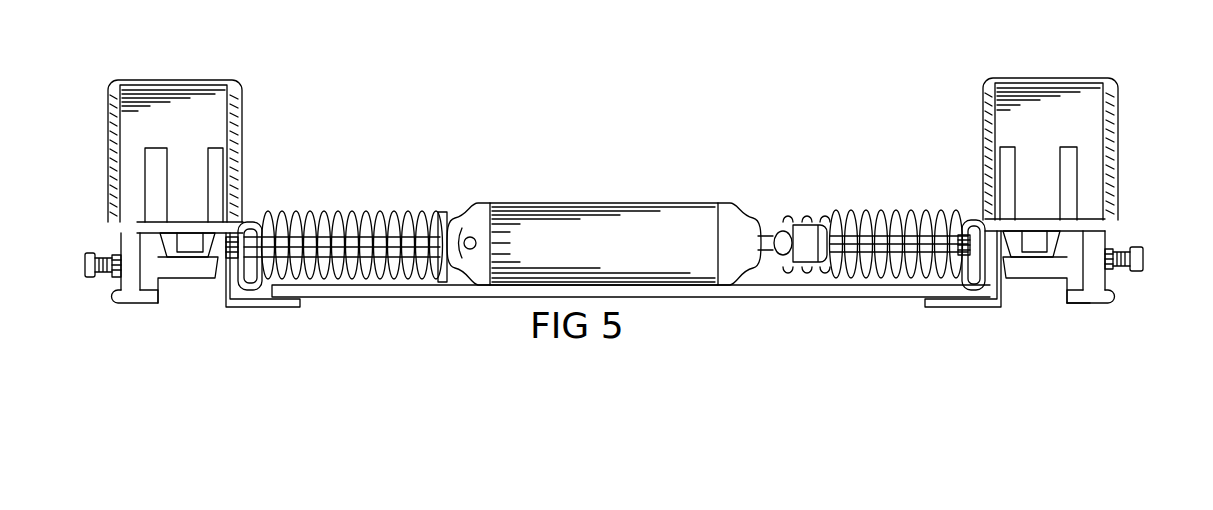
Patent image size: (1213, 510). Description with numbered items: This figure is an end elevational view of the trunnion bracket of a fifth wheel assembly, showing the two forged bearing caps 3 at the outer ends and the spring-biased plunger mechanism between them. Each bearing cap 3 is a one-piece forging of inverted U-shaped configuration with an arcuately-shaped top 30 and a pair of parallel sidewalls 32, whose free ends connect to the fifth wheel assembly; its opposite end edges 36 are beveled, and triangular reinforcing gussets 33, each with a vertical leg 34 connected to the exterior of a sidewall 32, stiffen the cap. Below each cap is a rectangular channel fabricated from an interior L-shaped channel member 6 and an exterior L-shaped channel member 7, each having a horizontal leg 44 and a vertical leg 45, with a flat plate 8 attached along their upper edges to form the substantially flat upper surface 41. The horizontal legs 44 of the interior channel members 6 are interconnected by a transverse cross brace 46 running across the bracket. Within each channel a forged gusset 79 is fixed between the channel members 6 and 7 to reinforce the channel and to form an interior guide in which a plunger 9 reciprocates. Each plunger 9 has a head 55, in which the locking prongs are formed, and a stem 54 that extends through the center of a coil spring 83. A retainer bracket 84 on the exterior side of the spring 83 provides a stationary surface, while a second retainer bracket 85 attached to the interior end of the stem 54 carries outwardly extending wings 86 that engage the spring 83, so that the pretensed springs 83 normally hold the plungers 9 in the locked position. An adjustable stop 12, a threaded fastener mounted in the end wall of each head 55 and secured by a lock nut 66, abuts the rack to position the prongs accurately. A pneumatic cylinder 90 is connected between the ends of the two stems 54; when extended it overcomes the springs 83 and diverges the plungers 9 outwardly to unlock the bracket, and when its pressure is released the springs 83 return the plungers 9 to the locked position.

The bearing cap 3 is at (641, 127).
The L-shaped channel member 6 is at (238, 302).
The L-shaped channel member 7 is at (122, 302).
The flat plate 8 is at (215, 228).
The plunger 9 is at (121, 240).
The adjustable stop 12 is at (1143, 262).
The arcuately-shaped top 30 is at (641, 129).
The sidewall 32 is at (218, 110).
The reinforcing gusset 33 is at (215, 165).
The vertical leg 34 is at (1060, 163).
The end edge 36 is at (240, 90).
The upper surface 41 is at (195, 287).
The horizontal leg 44 is at (1092, 296).
The vertical leg 45 is at (995, 301).
The transverse cross brace 46 is at (777, 290).
The stem 54 is at (381, 225).
The head 55 is at (180, 268).
The lock nut 66 is at (1118, 253).
The forged gusset 79 is at (186, 240).
The coil spring 83 is at (318, 212).
The retainer bracket 84 is at (968, 222).
The retainer bracket 85 is at (800, 225).
The wing 86 is at (440, 215).
The pneumatic cylinder 90 is at (660, 215).